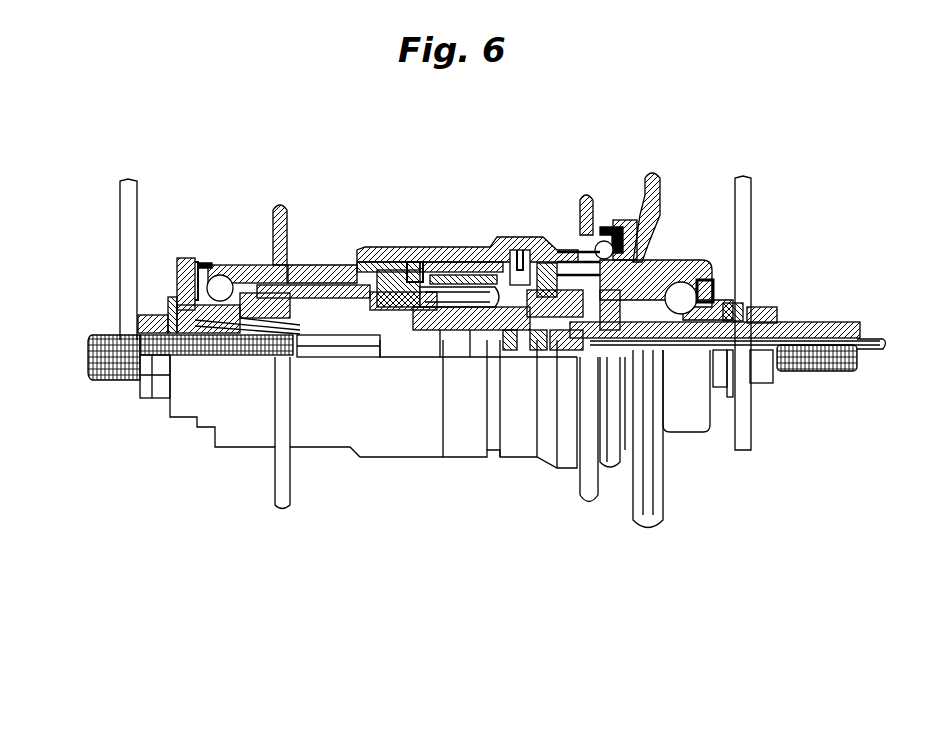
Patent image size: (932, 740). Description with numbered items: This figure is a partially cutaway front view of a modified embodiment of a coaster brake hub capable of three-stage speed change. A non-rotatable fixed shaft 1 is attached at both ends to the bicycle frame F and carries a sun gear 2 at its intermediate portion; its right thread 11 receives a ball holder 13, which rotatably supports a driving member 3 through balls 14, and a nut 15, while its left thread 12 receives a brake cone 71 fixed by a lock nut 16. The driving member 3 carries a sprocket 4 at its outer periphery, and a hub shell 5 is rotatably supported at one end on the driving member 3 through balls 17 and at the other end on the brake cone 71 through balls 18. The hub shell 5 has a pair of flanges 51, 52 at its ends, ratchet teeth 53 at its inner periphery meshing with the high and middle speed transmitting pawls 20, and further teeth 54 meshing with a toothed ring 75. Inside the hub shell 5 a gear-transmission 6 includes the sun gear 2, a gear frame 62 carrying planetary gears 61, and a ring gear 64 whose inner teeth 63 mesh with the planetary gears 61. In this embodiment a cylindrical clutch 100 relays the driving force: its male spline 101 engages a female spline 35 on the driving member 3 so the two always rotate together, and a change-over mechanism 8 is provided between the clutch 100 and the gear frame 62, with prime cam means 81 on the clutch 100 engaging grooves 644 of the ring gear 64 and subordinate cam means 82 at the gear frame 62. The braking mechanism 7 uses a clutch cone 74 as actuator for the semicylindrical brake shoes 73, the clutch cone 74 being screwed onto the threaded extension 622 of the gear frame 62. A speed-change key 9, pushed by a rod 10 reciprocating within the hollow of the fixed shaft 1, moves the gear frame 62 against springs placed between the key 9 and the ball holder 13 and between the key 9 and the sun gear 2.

The fixed shaft 1 is at (820, 322).
The sun gear 2 is at (460, 340).
The driving member 3 is at (715, 284).
The sprocket 4 is at (660, 200).
The hub shell 5 is at (575, 222).
The flange 51 is at (588, 232).
The flange 52 is at (278, 203).
The ratchet teeth 53 is at (503, 258).
The teeth 54 is at (372, 262).
The gear-transmission 6 is at (452, 262).
The planetary gears 61 is at (440, 340).
The gear frame 62 is at (408, 340).
The inner teeth 63 is at (432, 262).
The ring gear 64 is at (470, 262).
The cylindrical extension 622 is at (360, 470).
The grooves 644 is at (585, 462).
The braking mechanism 7 is at (250, 267).
The brake cone 71 is at (162, 313).
The brake shoes 73 is at (300, 265).
The clutch cone 74 is at (357, 265).
The ring 75 is at (397, 262).
The change-over mechanism 8 is at (543, 463).
The prime cam means 81 is at (548, 340).
The subordinate cam means 82 is at (535, 340).
The speed-change key 9 is at (522, 340).
The rod 10 is at (870, 350).
The screw thread 11 is at (829, 372).
The screw thread 12 is at (110, 383).
The ball holder 13 is at (765, 307).
The balls 14 is at (730, 303).
The nut 15 is at (764, 385).
The lock nut 16 is at (160, 396).
The balls 17 is at (612, 235).
The balls 18 is at (207, 267).
The high and middle speed transmitting pawls 20 is at (512, 252).
The female spline 35 is at (690, 270).
The clutch 100 is at (667, 262).
The male spline 101 is at (603, 455).
The bicycle frame F is at (118, 197).